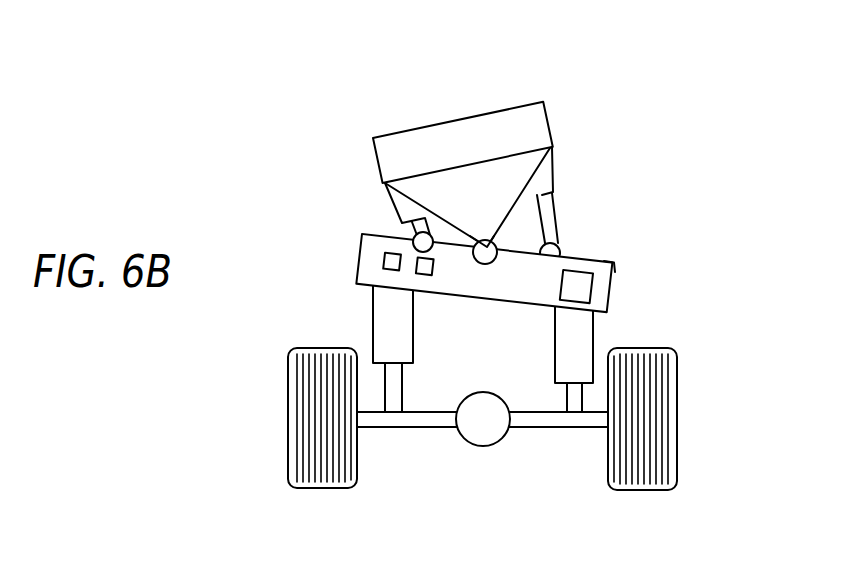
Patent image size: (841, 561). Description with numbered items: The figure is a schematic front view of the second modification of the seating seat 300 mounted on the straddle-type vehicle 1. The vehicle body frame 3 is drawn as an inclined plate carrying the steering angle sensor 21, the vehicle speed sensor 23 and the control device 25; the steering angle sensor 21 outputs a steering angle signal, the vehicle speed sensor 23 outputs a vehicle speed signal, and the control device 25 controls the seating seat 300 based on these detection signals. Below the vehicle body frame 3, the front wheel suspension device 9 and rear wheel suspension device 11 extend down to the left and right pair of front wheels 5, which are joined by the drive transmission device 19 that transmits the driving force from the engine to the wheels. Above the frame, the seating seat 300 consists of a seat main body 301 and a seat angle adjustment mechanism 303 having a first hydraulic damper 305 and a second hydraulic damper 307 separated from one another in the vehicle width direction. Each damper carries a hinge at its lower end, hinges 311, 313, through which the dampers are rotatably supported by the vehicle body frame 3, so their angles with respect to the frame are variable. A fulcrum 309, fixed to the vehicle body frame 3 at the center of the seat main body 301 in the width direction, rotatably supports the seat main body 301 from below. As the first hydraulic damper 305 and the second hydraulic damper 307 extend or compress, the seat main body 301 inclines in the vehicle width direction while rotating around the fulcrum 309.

The straddle-type vehicle 1 is at (334, 110).
The seating seat 300 is at (559, 93).
The seat main body 301 is at (547, 120).
The seat angle adjustment mechanism 303 is at (645, 163).
The first hydraulic damper 305 is at (553, 205).
The second hydraulic damper 307 is at (493, 232).
The fulcrum 309 is at (557, 245).
The hinge 311 is at (613, 262).
The hinge 313 is at (413, 242).
The vehicle body frame 3 is at (609, 279).
The steering angle sensor 21 is at (385, 263).
The vehicle speed sensor 23 is at (425, 275).
The control device 25 is at (592, 290).
The front wheel suspension device 9 is at (373, 321).
The rear wheel suspension device 11 is at (483, 349).
The front wheels 5 is at (288, 423).
The drive transmission device 19 is at (484, 447).